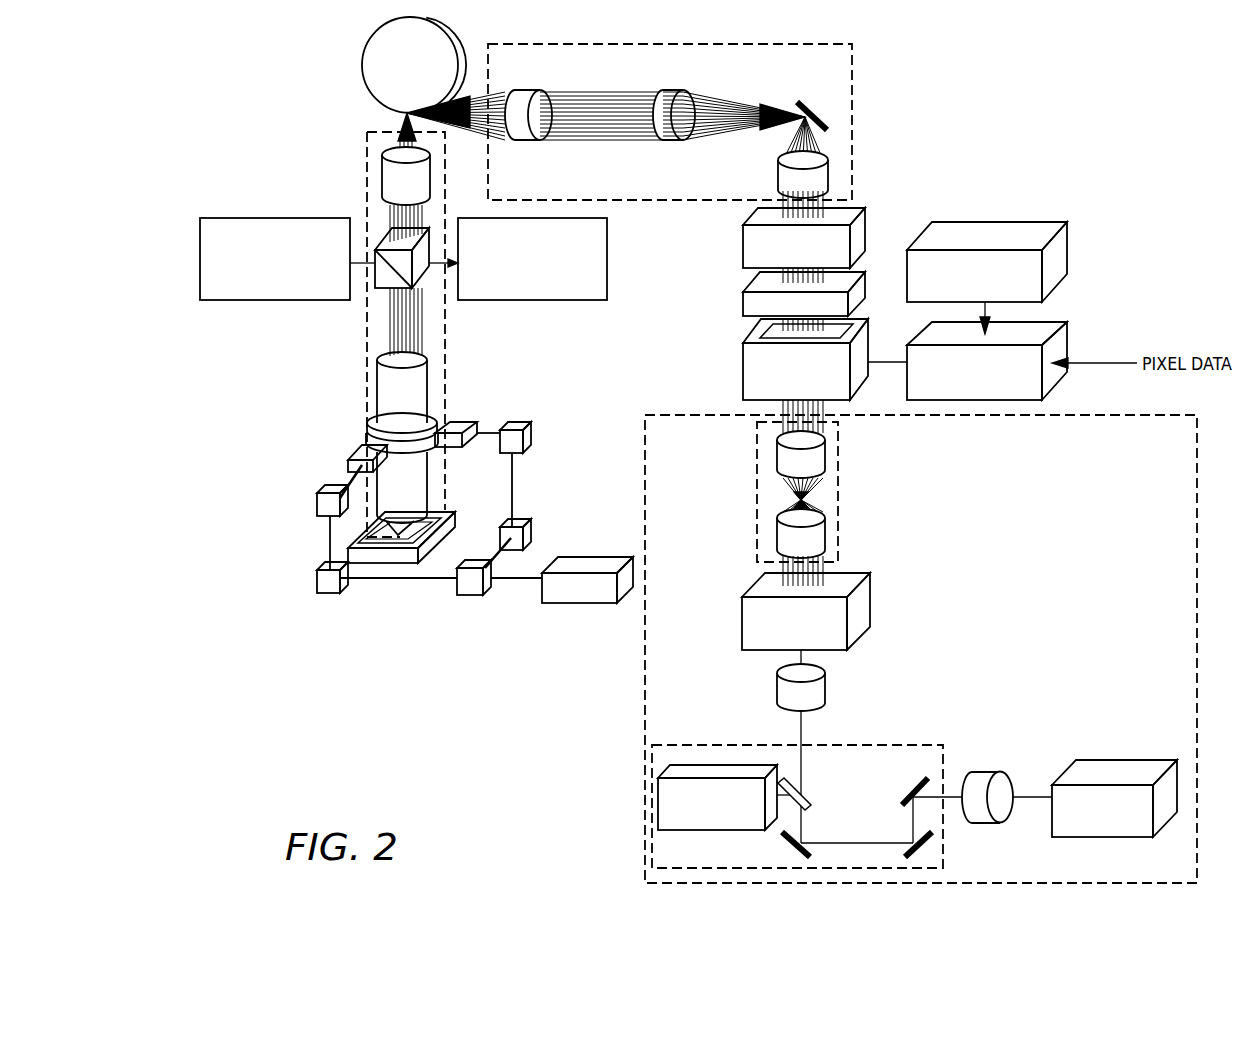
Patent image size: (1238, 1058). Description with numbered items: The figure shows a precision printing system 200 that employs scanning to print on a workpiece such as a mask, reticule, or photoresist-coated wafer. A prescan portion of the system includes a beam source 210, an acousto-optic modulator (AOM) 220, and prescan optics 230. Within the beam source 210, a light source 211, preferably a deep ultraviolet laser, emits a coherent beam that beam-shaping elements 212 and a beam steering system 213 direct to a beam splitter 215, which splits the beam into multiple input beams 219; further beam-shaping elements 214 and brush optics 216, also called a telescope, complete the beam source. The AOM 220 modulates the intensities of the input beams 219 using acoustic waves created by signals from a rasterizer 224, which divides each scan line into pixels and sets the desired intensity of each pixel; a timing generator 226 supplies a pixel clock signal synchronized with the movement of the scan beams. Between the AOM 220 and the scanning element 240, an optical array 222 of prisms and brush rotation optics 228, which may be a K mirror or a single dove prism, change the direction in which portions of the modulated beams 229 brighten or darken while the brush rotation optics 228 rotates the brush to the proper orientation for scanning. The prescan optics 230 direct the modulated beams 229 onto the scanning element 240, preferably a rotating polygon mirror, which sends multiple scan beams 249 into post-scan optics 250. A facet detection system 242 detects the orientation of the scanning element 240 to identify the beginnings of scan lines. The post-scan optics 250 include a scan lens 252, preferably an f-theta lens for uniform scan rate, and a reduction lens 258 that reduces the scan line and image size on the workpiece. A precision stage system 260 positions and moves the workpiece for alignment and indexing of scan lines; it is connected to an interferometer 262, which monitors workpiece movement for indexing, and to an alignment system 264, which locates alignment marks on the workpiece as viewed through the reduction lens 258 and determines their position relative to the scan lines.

The precision printing system 200 is at (1031, 87).
The beam source 210 is at (1043, 596).
The light source 211 is at (1114, 781).
The beam-shaping elements 212 is at (1006, 780).
The beam steering system 213 is at (809, 786).
The beam-shaping elements 214 is at (839, 687).
The beam splitter 215 is at (845, 611).
The brush optics 216 is at (804, 492).
The input beams 219 is at (783, 429).
The acousto-optic modulator 220 is at (805, 353).
The optical array 222 is at (743, 300).
The rasterizer 224 is at (1017, 366).
The timing generator 226 is at (994, 239).
The brush rotation optics 228 is at (743, 243).
The modulated input beams 229 is at (828, 334).
The prescan optics 230 is at (629, 107).
The scanning element 240 is at (362, 50).
The facet detection system 242 is at (532, 277).
The scan beams 249 is at (402, 122).
The post-scan optics 250 is at (376, 334).
The scan lens 252 is at (382, 165).
The reduction lens 258 is at (430, 388).
The precision stage system 260 is at (353, 547).
The interferometer 262 is at (570, 596).
The alignment system 264 is at (275, 239).